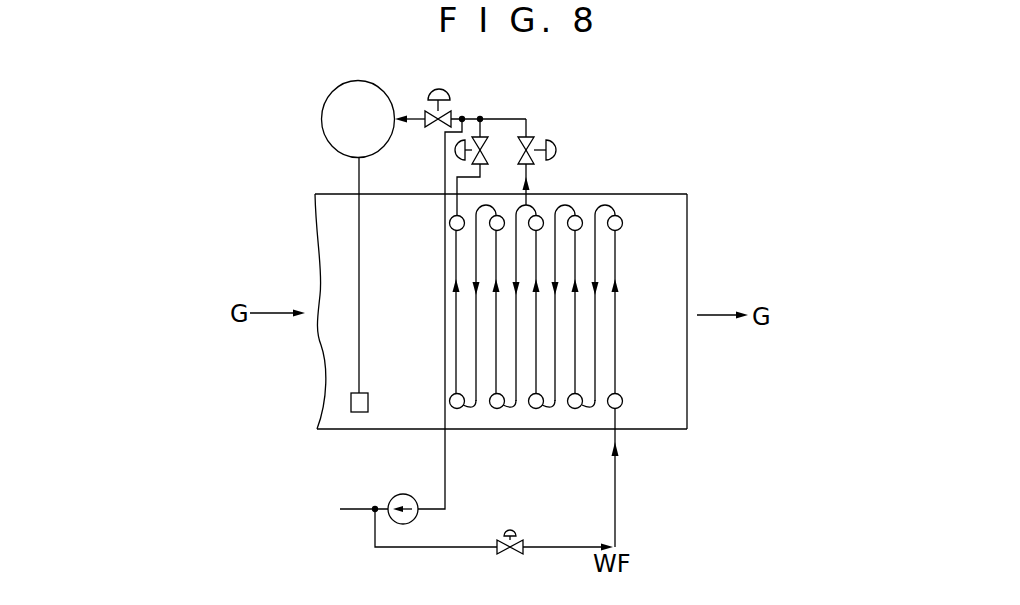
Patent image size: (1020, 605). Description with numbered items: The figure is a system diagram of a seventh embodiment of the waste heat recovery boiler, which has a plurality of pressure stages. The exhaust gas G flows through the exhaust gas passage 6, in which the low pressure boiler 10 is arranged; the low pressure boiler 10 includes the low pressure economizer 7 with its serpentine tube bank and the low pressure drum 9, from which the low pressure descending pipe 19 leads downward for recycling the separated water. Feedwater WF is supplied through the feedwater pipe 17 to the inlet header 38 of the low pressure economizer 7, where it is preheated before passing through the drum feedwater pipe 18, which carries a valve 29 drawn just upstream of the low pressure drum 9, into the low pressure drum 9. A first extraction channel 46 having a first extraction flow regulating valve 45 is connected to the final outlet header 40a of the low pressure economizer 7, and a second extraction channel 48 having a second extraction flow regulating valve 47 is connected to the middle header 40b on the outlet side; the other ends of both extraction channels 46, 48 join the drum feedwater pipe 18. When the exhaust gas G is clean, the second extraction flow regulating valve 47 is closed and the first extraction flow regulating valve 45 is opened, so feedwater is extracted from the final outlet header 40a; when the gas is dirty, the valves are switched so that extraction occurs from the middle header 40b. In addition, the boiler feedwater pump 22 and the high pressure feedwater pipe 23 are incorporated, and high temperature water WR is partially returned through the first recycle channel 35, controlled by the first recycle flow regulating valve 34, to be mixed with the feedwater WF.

The exhaust gas passage 6 is at (682, 194).
The low pressure economizer 7 is at (455, 338).
The low pressure drum 9 is at (327, 98).
The low pressure boiler 10 is at (385, 78).
The feedwater pipe 17 is at (617, 526).
The drum feedwater pipe 18 is at (469, 117).
The low pressure descending pipe 19 is at (359, 380).
The boiler feedwater pump 22 is at (415, 520).
The high pressure feedwater pipe 23 is at (350, 511).
The control valve 29 is at (443, 95).
The first recycle flow regulating valve 34 is at (513, 531).
The first recycle channel 35 is at (470, 549).
The inlet header 38 is at (621, 406).
The final outlet header 40a is at (450, 222).
The middle header 40b is at (539, 216).
The first extraction flow regulating valve 45 is at (456, 150).
The first extraction channel 46 is at (457, 177).
The second extraction flow regulating valve 47 is at (554, 153).
The second extraction channel 48 is at (528, 126).